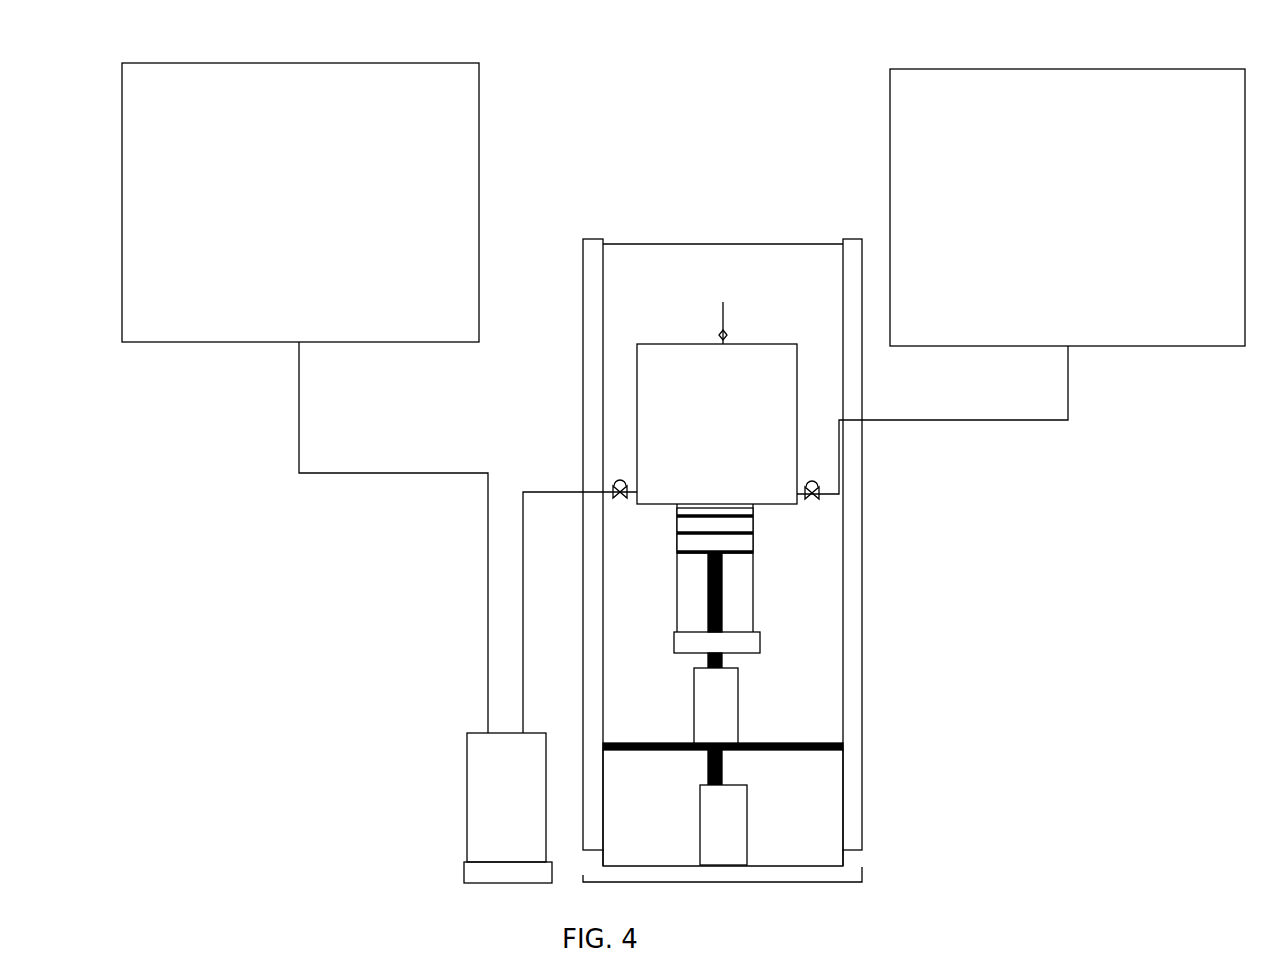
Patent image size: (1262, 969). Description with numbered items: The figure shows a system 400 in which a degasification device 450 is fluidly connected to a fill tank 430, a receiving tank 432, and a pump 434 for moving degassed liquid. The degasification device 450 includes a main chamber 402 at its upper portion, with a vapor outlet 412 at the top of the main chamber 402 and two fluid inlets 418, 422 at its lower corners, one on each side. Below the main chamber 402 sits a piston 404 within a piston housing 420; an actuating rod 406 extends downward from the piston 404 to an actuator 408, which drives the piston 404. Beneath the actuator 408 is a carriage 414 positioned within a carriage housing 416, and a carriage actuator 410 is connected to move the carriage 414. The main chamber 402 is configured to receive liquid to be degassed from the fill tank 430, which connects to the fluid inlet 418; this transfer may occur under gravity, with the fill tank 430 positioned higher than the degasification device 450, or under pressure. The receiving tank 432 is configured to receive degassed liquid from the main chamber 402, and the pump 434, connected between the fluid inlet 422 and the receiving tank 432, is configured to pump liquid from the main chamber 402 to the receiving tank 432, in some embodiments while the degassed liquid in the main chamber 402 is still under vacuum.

The system 400 is at (667, 454).
The main chamber 402 is at (660, 392).
The piston 404 is at (745, 525).
The actuating rod 406 is at (728, 608).
The actuator 408 is at (728, 706).
The carriage actuator 410 is at (728, 819).
The vapor outlet 412 is at (715, 325).
The carriage 414 is at (723, 768).
The carriage housing 416 is at (723, 808).
The fluid inlet 418 is at (825, 488).
The piston housing 420 is at (677, 577).
The fluid inlet 422 is at (617, 487).
The fill tank 430 is at (1067, 207).
The receiving tank 432 is at (300, 202).
The pump 434 is at (475, 820).
The degasification device 450 is at (720, 537).